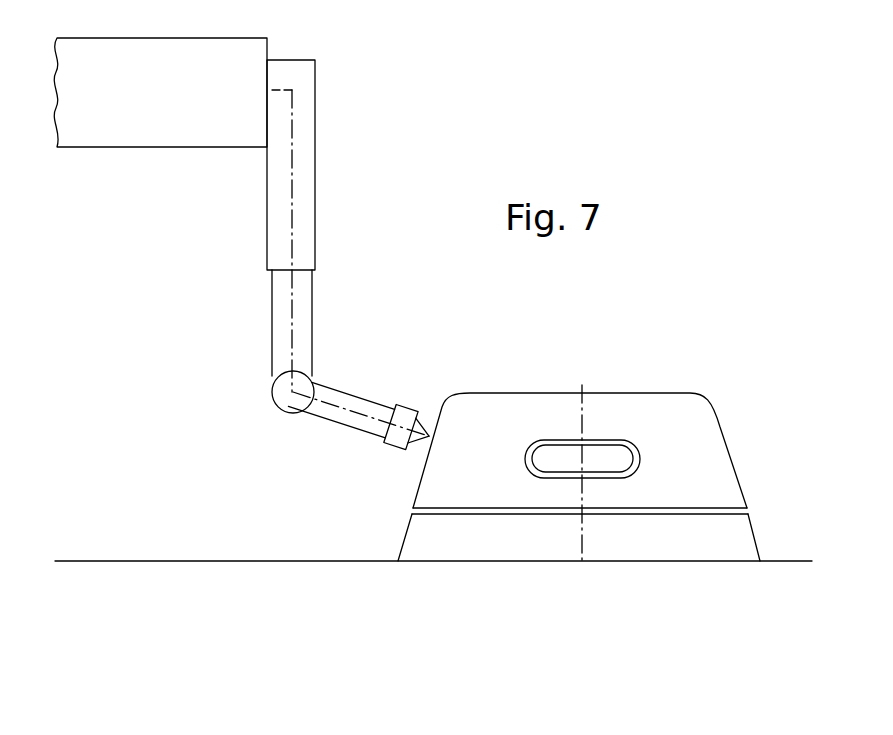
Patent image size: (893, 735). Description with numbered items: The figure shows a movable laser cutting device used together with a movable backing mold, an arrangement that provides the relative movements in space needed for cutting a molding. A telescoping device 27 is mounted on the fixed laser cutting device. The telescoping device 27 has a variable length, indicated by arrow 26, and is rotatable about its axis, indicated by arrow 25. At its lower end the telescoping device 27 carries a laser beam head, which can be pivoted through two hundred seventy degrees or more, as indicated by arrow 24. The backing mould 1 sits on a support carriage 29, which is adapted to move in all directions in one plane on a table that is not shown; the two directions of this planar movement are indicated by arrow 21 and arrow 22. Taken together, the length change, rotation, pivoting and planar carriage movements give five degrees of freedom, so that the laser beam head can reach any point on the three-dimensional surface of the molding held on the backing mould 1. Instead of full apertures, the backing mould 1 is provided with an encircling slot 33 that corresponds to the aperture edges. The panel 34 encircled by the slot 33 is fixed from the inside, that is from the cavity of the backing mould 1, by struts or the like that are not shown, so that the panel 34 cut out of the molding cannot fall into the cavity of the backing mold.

The backing mould 1 is at (678, 386).
The arrow 21 is at (757, 480).
The arrow 22 is at (385, 613).
The arrow 24 is at (356, 447).
The arrow 25 is at (251, 321).
The arrow 26 is at (353, 289).
The telescoping device 27 is at (317, 110).
The support carriage 29 is at (303, 560).
The encircling slot 33 is at (587, 445).
The panel 34 is at (568, 460).